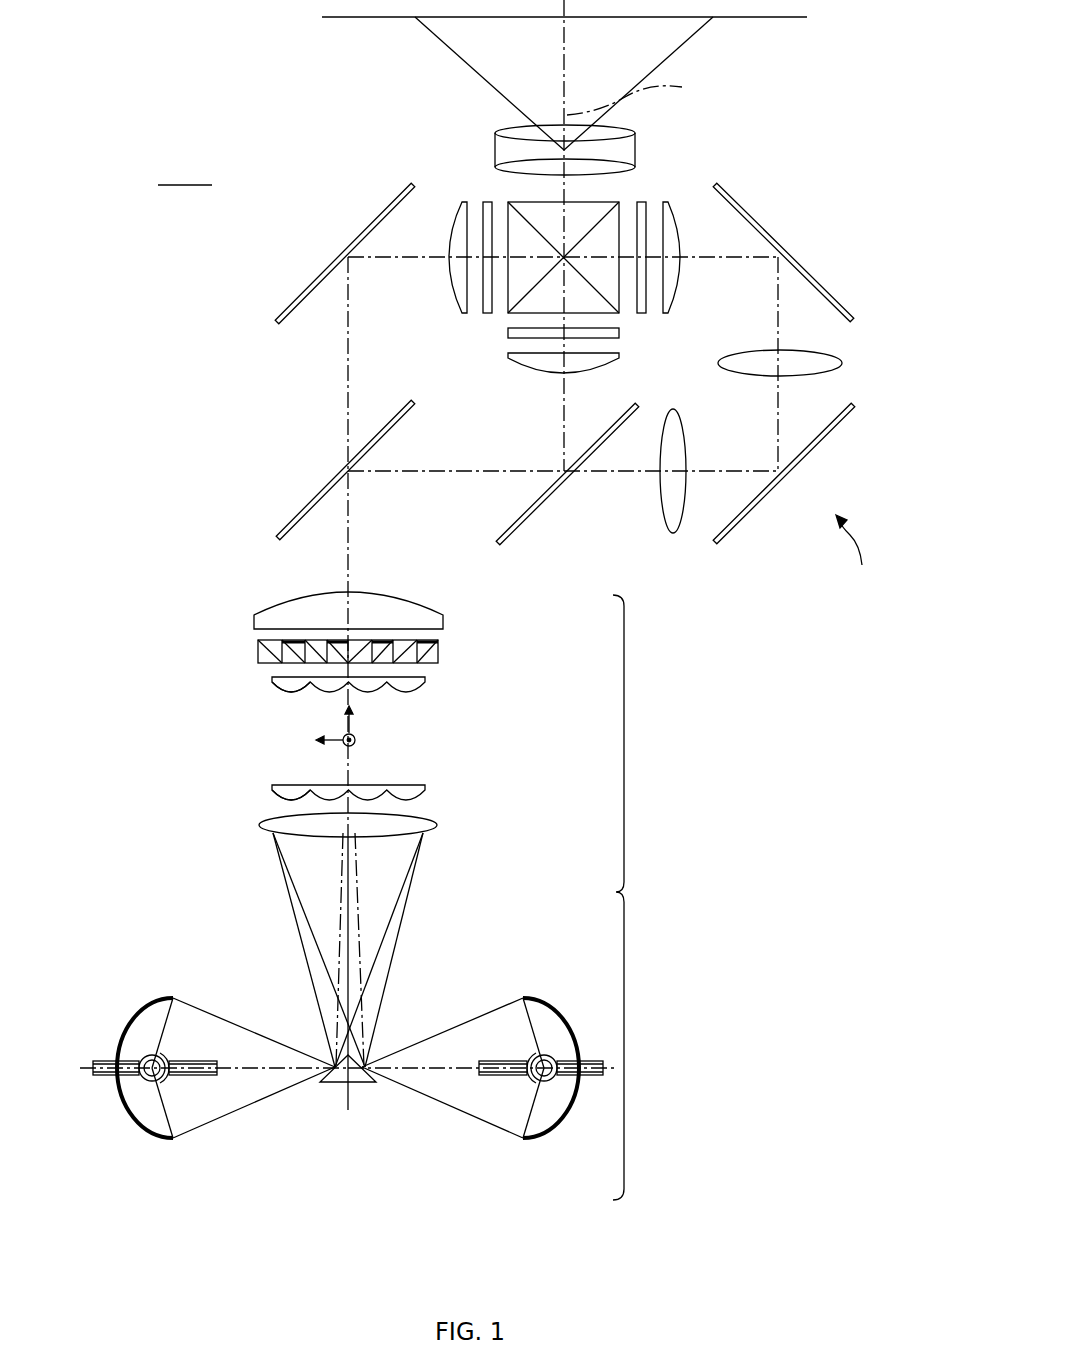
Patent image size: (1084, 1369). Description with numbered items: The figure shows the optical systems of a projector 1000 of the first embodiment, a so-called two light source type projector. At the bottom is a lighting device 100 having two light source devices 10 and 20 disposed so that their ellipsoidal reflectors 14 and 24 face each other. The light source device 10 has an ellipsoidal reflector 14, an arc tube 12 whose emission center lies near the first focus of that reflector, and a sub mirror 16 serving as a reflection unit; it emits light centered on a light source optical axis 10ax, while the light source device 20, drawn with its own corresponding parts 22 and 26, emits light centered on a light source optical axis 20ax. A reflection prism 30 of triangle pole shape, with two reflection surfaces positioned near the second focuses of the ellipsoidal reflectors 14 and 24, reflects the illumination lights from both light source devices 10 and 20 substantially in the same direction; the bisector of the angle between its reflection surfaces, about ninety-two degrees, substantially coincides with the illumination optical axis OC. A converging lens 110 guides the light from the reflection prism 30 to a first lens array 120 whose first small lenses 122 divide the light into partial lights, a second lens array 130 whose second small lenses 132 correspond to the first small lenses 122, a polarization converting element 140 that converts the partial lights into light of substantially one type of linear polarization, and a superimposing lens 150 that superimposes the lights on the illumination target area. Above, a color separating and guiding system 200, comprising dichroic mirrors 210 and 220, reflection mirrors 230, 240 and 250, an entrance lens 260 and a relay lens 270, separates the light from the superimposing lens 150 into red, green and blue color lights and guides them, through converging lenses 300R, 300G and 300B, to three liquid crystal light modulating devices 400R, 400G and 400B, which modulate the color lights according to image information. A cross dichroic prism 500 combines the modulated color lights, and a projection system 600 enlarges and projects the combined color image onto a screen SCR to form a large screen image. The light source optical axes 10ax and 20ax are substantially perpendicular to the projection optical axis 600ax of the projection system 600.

The projector 1000 is at (188, 173).
The screen SCR is at (772, 19).
The projection optical axis 600ax is at (665, 94).
The projection system 600 is at (637, 143).
The cross dichroic prism 500 is at (513, 200).
The liquid crystal light modulating device 400R is at (483, 200).
The liquid crystal light modulating device 400G is at (620, 333).
The liquid crystal light modulating device 400B is at (645, 200).
The converging lens 300R is at (466, 313).
The converging lens 300G is at (508, 355).
The converging lens 300B is at (670, 198).
The reflection mirror 250 is at (770, 225).
The reflection mirror 230 is at (295, 298).
The dichroic mirror 210 is at (295, 515).
The dichroic mirror 220 is at (535, 520).
The reflection mirror 240 is at (745, 520).
The entrance lens 260 is at (672, 535).
The relay lens 270 is at (843, 363).
The color separating and guiding system 200 is at (864, 555).
The superimposing lens 150 is at (443, 622).
The polarization converting element 140 is at (438, 652).
The second lens array 130 is at (425, 680).
The second small lens 132 is at (280, 683).
The first lens array 120 is at (425, 788).
The first small lens 122 is at (280, 793).
The converging lens 110 is at (437, 820).
The illumination optical axis OC is at (348, 773).
The lighting device 100 is at (648, 897).
The reflection prism 30 is at (343, 1085).
The light source optical axis 10ax is at (288, 1068).
The light source optical axis 20ax is at (408, 1068).
The light source device 10 is at (214, 1101).
The arc tube 12 is at (152, 1085).
The ellipsoidal reflector 14 is at (132, 1118).
The sub mirror 16 is at (170, 1080).
The light source device 20 is at (482, 1101).
The second arc tube 22 is at (544, 1085).
The ellipsoidal reflector 24 is at (568, 1112).
The second sealing portion 26 is at (580, 1165).